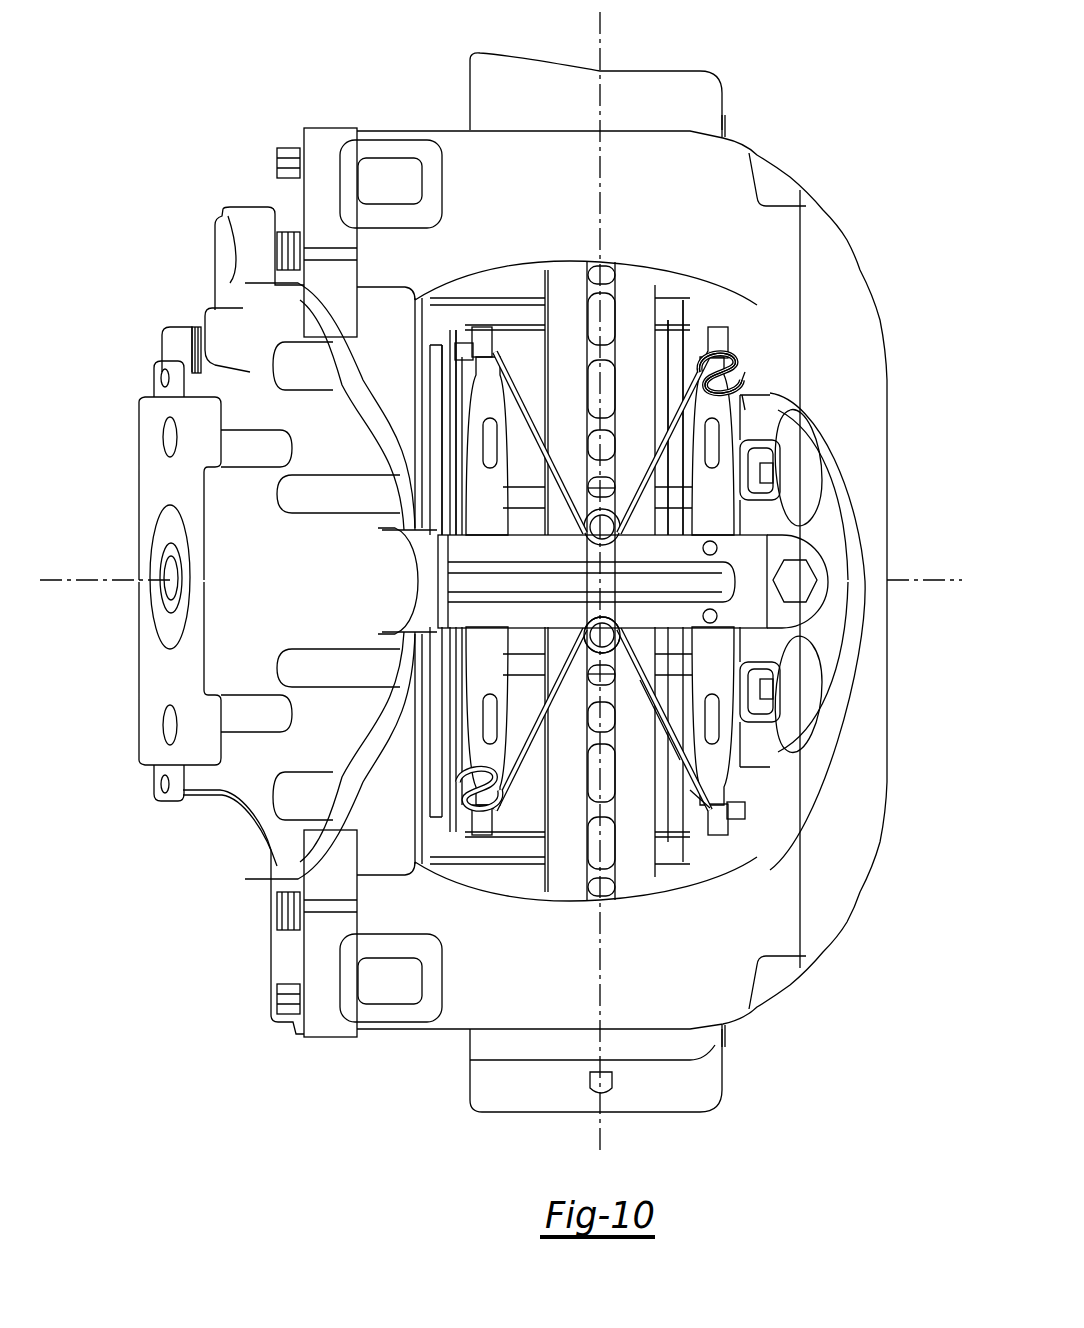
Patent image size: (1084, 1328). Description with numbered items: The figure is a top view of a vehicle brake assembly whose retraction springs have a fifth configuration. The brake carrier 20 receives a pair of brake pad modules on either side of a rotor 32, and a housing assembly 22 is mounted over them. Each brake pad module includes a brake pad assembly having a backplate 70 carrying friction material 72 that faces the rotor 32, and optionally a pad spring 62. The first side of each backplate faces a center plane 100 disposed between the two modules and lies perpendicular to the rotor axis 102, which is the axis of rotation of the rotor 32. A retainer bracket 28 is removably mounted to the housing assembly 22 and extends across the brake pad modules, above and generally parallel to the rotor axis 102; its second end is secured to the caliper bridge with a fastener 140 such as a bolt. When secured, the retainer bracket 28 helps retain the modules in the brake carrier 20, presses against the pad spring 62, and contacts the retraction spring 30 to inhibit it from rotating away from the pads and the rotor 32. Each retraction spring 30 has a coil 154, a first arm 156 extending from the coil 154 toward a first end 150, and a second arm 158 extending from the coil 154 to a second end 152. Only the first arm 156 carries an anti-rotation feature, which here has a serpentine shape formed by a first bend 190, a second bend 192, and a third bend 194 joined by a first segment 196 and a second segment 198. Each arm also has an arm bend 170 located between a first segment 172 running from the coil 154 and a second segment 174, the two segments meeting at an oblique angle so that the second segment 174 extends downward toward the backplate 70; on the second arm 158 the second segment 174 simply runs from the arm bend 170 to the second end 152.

The brake carrier 20 is at (712, 72).
The housing assembly 22 is at (305, 136).
The retainer bracket 28 is at (828, 630).
The retraction spring 30 is at (602, 581).
The rotor 32 is at (632, 292).
The pad spring 62 is at (477, 689).
The backplate 70 is at (478, 347).
The friction material 72 is at (518, 347).
The center plane 100 is at (604, 70).
The rotor axis 102 is at (935, 572).
The fastener 140 is at (808, 575).
The first end 150 is at (738, 330).
The second end 152 is at (472, 352).
The coil 154 is at (560, 512).
The first arm 156 is at (685, 425).
The second arm 158 is at (545, 440).
The arm bend 170 is at (672, 760).
The first segment 172 is at (640, 655).
The second segment 174 is at (700, 805).
The first bend 190 is at (712, 352).
The second bend 192 is at (745, 370).
The third bend 194 is at (712, 392).
The first segment 196 is at (700, 380).
The second segment 198 is at (742, 412).